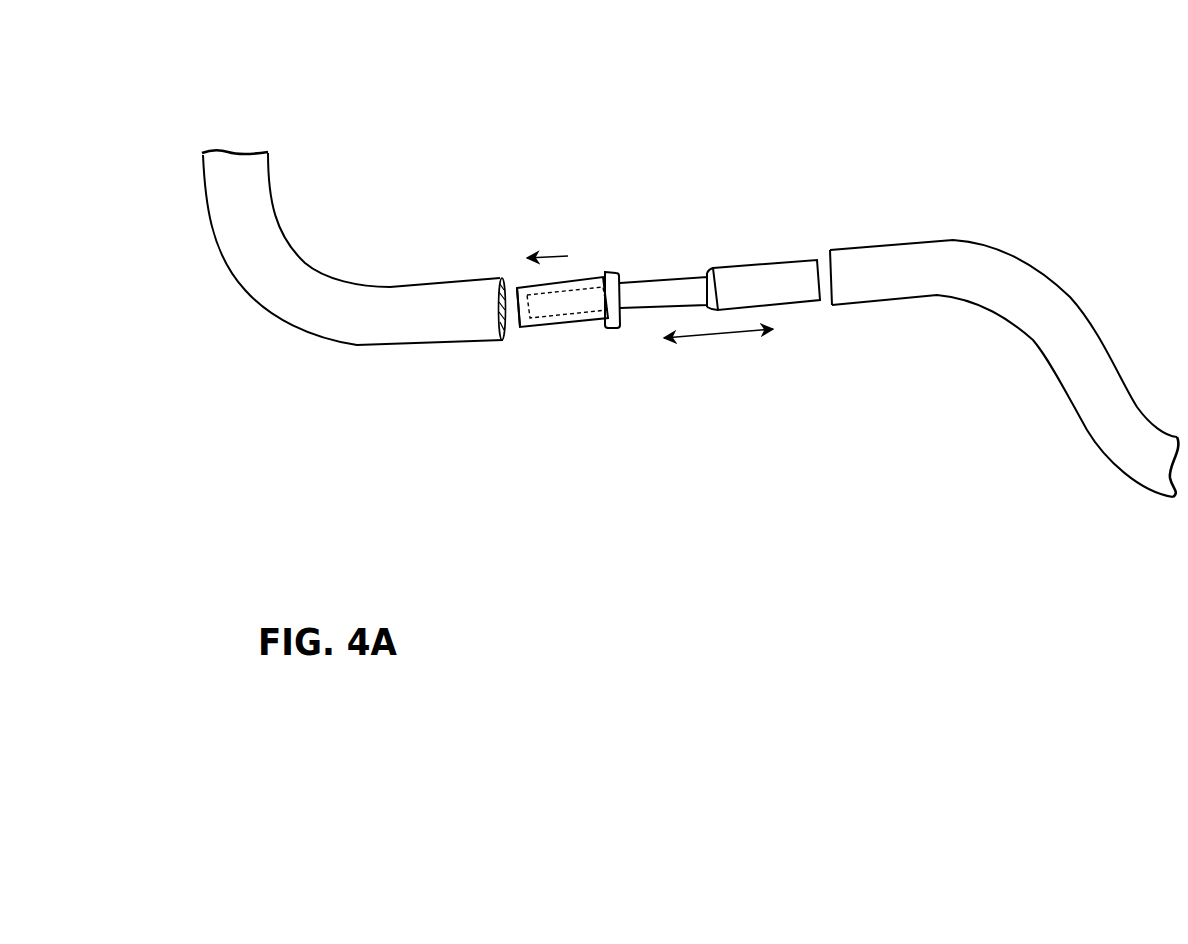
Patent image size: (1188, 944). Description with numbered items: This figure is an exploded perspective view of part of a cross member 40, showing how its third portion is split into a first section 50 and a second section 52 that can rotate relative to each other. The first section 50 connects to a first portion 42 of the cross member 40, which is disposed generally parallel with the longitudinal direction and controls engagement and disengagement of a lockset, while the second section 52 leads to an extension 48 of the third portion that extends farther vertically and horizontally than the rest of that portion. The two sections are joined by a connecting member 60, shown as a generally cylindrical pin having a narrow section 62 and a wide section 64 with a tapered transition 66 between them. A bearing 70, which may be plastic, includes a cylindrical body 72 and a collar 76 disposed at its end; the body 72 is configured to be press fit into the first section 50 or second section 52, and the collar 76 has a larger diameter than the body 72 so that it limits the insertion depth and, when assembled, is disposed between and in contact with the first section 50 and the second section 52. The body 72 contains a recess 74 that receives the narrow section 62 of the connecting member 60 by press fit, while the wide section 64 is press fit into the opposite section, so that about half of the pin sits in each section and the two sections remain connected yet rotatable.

The cross member 40 is at (924, 118).
The first portion 42 is at (281, 191).
The extension 48 is at (1085, 454).
The first section 50 is at (482, 333).
The second section 52 is at (878, 297).
The connecting member 60 is at (653, 181).
The narrow section 62 is at (650, 310).
The wide section 64 is at (768, 263).
The tapered transition 66 is at (707, 273).
The bearing 70 is at (566, 361).
The cylindrical body 72 is at (520, 278).
The recess 74 is at (582, 278).
The collar 76 is at (612, 272).